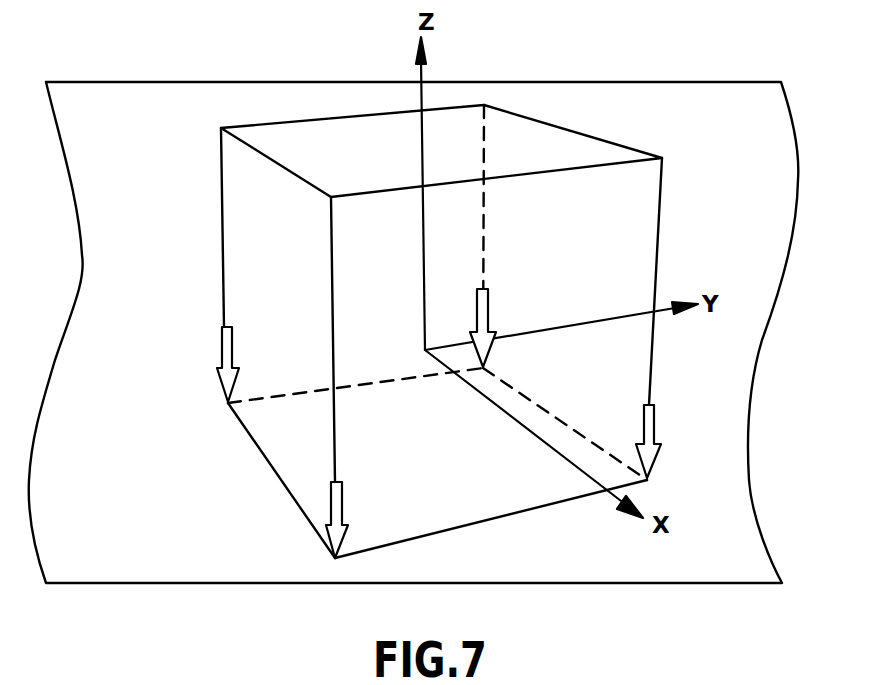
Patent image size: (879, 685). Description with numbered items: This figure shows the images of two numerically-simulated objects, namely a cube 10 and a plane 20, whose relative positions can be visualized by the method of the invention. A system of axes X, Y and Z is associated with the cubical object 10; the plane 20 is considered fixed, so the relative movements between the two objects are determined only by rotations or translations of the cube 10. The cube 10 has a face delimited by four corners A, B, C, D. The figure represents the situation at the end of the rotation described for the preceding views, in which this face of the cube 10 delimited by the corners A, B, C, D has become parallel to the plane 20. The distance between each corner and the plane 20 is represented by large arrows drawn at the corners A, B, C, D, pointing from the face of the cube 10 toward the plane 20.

The cube 10 is at (212, 256).
The plane 20 is at (143, 155).
The corner A is at (226, 345).
The corner B is at (489, 301).
The corner C is at (343, 504).
The corner D is at (657, 412).